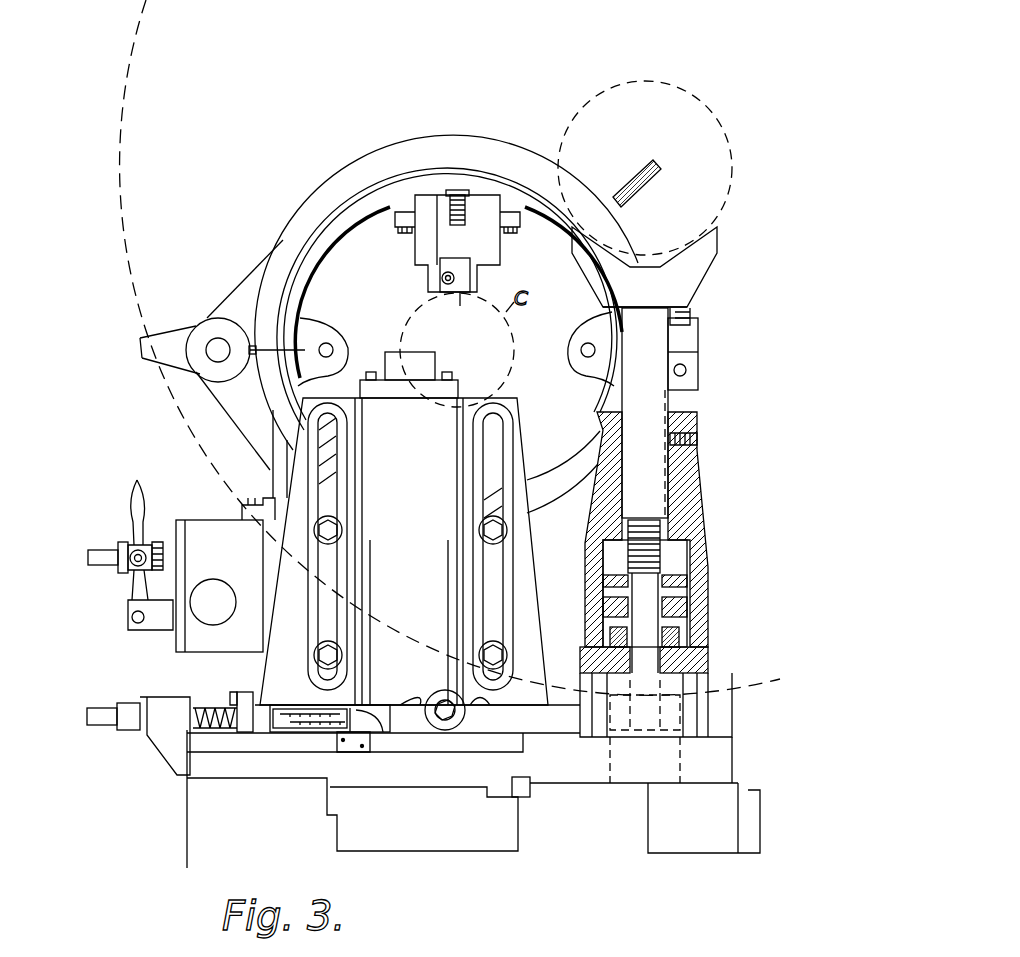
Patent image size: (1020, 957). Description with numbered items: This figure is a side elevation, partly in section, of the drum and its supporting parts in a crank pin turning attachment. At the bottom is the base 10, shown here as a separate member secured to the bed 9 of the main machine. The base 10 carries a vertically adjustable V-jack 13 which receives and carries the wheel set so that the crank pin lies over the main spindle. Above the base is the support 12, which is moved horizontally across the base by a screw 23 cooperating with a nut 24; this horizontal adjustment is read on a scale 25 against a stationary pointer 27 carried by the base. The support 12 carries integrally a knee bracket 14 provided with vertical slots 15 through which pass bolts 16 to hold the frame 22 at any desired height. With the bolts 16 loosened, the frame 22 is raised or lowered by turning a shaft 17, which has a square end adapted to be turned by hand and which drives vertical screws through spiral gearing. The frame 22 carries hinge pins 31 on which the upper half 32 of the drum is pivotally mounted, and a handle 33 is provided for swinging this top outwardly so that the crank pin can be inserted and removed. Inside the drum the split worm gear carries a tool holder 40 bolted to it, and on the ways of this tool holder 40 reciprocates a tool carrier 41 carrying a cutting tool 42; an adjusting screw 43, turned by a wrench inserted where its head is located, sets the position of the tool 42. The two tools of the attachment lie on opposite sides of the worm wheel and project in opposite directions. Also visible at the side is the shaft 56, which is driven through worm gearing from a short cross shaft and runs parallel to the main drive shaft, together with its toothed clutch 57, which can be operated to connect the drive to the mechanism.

The bed 9 is at (200, 828).
The base 10 is at (237, 768).
The support 12 is at (530, 736).
The V-jacks 13 is at (692, 278).
The knee brackets 14 is at (516, 446).
The vertical slots 15 is at (492, 577).
The bolts 16 is at (334, 530).
The shaft 17 is at (440, 706).
The frame 22 is at (258, 526).
The screw 23 is at (97, 724).
The nut 24 is at (245, 692).
The scale 25 is at (288, 735).
The stationary pointer 27 is at (365, 722).
The hinge pins 31 is at (214, 348).
The upper half of the drum 32 is at (452, 138).
The handle 33 is at (630, 172).
The tool holder 40 is at (410, 238).
The tool carrier 41 is at (478, 274).
The tool 42 is at (460, 304).
The adjusting screw 43 is at (466, 215).
The shaft 56 is at (99, 548).
The toothed clutch 57 is at (150, 545).